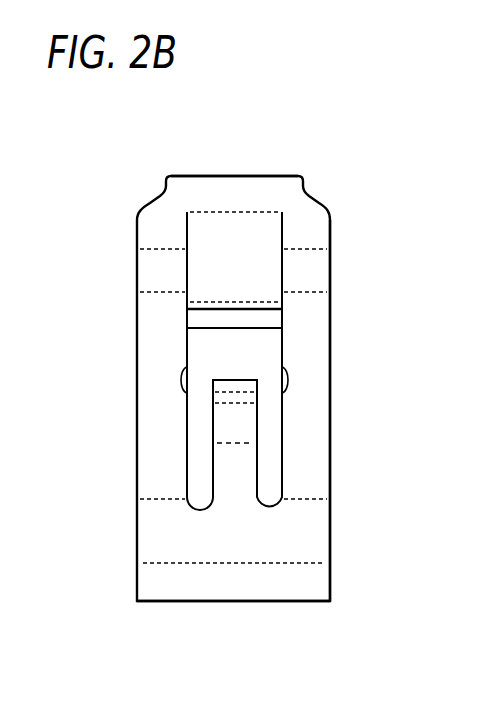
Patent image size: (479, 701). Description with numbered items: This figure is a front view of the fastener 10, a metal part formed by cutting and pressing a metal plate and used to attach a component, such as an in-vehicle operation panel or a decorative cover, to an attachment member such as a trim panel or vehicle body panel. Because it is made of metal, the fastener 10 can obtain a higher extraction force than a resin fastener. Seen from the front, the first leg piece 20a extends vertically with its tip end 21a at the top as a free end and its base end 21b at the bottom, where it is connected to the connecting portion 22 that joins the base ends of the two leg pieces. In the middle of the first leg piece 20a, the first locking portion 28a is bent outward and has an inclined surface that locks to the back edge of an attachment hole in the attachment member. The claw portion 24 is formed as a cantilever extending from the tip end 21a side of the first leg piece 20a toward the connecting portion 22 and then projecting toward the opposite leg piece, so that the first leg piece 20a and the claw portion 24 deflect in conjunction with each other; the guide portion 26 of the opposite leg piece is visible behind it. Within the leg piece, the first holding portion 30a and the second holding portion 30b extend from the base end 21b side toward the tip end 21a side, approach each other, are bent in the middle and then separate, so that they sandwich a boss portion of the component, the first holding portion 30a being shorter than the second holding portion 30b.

The fastener 10 is at (228, 660).
The first leg piece 20a is at (344, 432).
The tip end 21a is at (262, 176).
The base end 21b is at (300, 563).
The connecting portion 22 is at (286, 588).
The claw portion 24 is at (237, 300).
The guide portion 26 is at (238, 318).
The first locking portion 28a is at (163, 283).
The first holding portion 30a is at (233, 444).
The second holding portion 30b is at (232, 380).